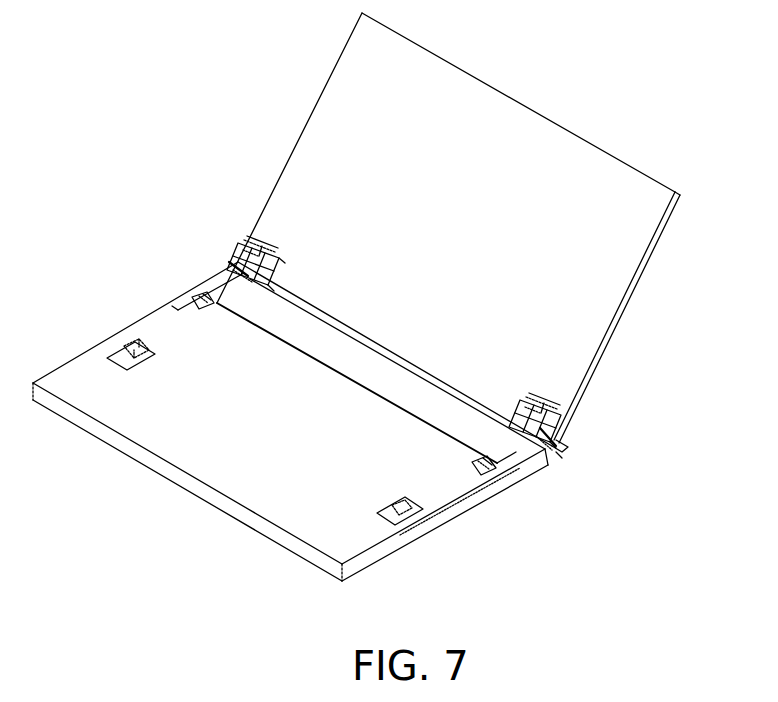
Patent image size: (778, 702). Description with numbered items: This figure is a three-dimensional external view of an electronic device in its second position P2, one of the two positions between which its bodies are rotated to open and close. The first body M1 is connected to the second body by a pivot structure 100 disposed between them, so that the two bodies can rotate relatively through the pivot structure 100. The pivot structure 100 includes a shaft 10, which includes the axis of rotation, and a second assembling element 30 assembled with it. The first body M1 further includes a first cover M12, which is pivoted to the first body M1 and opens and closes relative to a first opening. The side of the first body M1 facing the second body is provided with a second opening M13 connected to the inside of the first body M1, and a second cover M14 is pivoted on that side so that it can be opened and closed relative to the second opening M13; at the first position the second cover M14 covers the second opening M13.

The first body M1 is at (332, 63).
The shaft 10 is at (235, 251).
The second assembling element 30 is at (253, 229).
The pivot structure 100 is at (222, 264).
The first cover M12 is at (473, 505).
The second opening M13 is at (554, 467).
The second cover M14 is at (501, 470).
The second position P2 is at (113, 135).